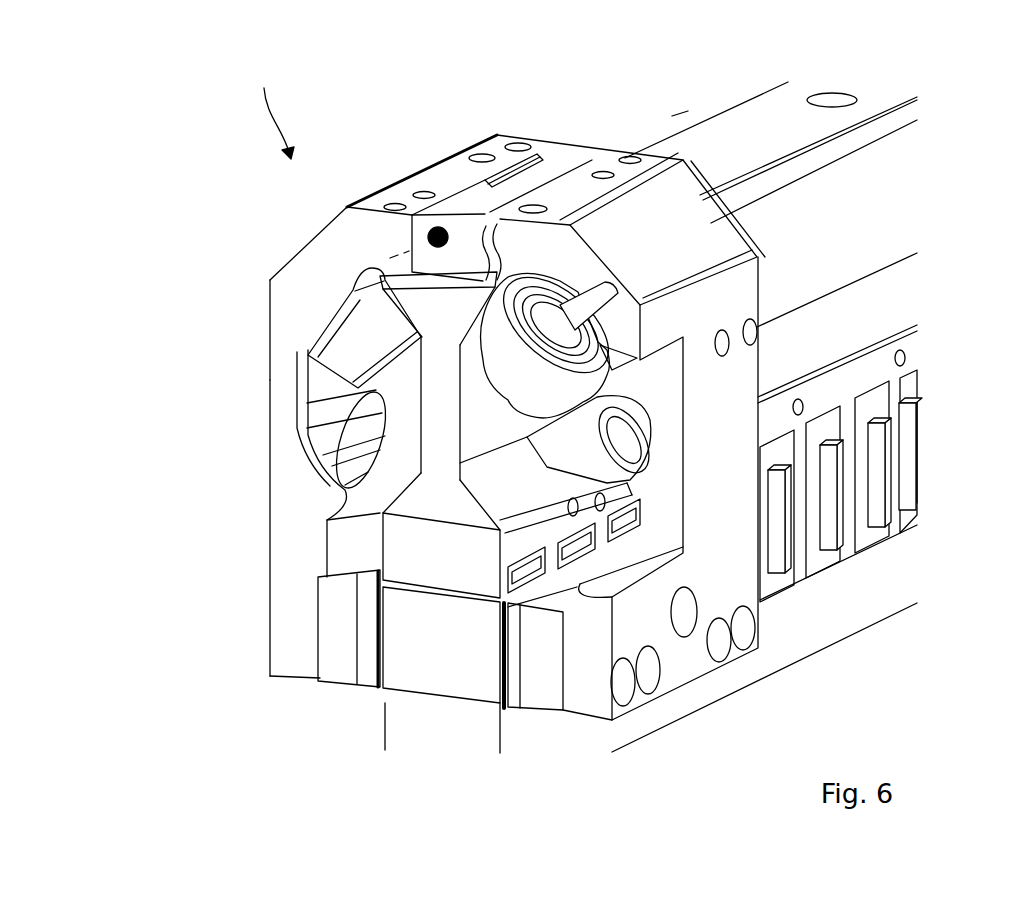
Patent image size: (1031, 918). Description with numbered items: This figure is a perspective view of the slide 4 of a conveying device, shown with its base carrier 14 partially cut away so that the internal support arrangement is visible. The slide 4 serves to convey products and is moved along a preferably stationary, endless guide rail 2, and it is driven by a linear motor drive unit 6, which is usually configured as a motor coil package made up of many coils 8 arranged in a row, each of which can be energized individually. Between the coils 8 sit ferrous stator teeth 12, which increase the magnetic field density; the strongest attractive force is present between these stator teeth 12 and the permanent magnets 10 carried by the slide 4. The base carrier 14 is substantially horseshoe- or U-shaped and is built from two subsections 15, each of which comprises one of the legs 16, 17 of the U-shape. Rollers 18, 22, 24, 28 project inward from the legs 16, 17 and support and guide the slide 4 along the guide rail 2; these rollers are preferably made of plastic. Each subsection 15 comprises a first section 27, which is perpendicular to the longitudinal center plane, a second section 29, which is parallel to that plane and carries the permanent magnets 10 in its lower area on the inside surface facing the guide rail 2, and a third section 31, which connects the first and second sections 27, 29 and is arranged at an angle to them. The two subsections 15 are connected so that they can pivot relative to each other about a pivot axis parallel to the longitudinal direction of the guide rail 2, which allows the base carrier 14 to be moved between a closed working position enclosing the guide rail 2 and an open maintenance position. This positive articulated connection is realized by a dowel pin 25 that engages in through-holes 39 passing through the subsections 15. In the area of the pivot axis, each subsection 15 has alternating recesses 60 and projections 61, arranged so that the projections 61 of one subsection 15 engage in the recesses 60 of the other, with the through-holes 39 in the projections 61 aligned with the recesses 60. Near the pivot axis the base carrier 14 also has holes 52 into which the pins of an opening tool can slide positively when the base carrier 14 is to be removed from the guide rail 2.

The guide rail 2 is at (760, 147).
The slide 4 is at (271, 107).
The linear motor drive unit 6 is at (420, 663).
The coils 8 is at (780, 583).
The permanent magnets 10 is at (368, 655).
The stator teeth 12 is at (855, 443).
The base carrier 14 is at (463, 168).
The subsections 15 is at (292, 560).
The leg 16 is at (282, 367).
The leg 17 is at (725, 445).
The roller 18 is at (360, 350).
The roller 22 is at (405, 415).
The roller 24 is at (502, 342).
The dowel pin 25 is at (347, 207).
The first section 27 is at (456, 168).
The roller 28 is at (553, 452).
The second section 29 is at (290, 399).
The third section 31 is at (322, 262).
The through-holes 39 is at (432, 230).
The holes 52 is at (597, 152).
The recesses 60 is at (575, 160).
The projections 61 is at (530, 145).